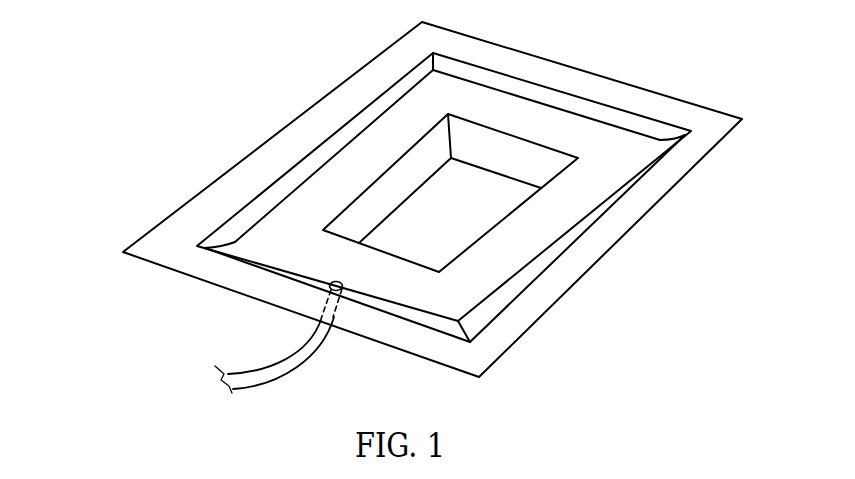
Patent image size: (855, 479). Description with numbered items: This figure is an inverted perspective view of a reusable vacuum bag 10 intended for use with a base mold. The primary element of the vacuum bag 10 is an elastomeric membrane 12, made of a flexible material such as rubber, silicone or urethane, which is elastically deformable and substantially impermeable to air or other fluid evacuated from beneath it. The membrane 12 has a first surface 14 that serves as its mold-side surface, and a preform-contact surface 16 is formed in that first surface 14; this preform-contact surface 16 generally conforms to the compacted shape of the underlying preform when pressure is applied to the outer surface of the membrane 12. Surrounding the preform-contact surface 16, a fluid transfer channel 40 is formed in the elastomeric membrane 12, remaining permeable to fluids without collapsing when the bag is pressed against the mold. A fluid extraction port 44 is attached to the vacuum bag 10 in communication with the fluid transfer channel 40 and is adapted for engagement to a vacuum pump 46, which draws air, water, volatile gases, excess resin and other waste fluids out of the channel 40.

The reusable vacuum bag 10 is at (172, 64).
The elastomeric membrane 12 is at (191, 200).
The first surface 14 is at (165, 240).
The preform-contact surface 16 is at (466, 224).
The fluid transfer channel 40 is at (485, 315).
The fluid extraction port 44 is at (343, 288).
The vacuum pump 46 is at (218, 382).